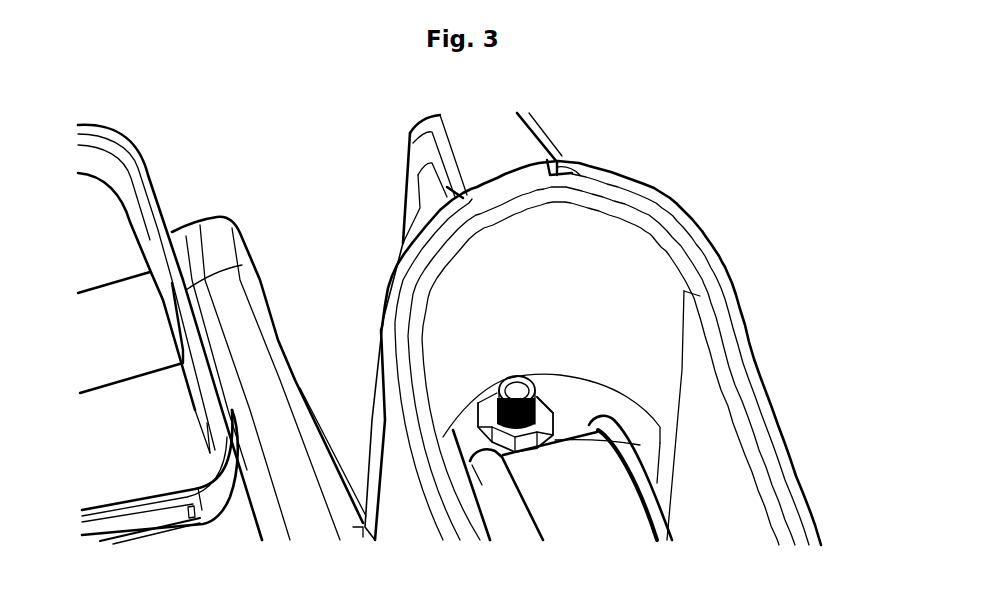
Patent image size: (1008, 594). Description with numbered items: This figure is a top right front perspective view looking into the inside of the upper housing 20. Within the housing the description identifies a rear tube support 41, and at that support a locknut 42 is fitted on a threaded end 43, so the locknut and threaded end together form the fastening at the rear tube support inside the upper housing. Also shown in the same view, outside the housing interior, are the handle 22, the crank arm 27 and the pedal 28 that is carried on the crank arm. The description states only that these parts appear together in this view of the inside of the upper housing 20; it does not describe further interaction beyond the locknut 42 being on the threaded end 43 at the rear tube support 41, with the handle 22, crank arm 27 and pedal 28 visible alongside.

The upper housing 20 is at (775, 418).
The handle 22 is at (415, 170).
The crank arm 27 is at (213, 243).
The pedal 28 is at (144, 178).
The rear tube support 41 is at (577, 410).
The locknut 42 is at (540, 407).
The threaded end 43 is at (517, 390).